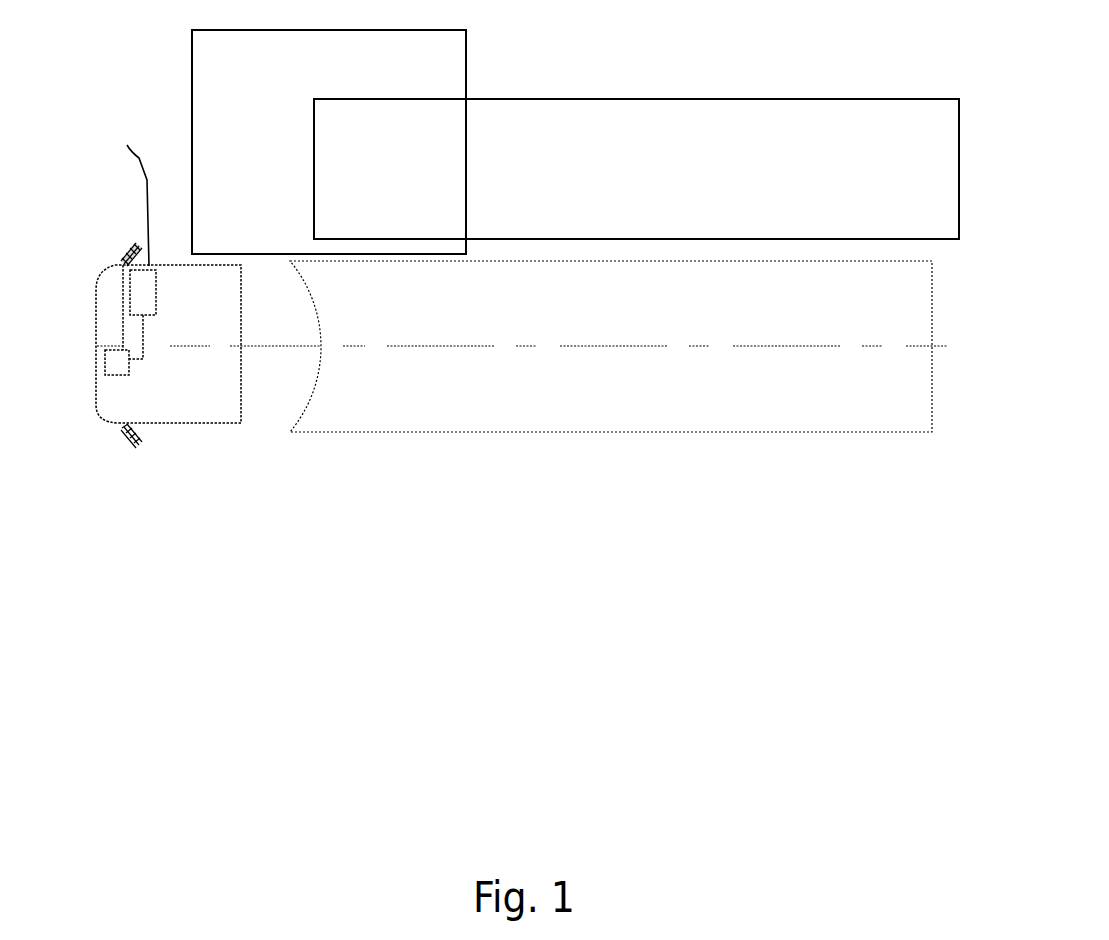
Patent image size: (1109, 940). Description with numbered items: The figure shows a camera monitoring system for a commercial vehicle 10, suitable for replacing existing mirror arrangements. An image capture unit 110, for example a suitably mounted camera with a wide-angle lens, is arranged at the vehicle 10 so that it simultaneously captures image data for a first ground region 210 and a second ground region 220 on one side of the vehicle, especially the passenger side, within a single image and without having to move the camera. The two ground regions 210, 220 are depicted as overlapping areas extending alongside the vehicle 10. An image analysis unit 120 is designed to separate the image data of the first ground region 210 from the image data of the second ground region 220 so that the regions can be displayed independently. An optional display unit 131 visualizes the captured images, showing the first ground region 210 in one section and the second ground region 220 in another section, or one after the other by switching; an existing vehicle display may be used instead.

The commercial vehicle 10 is at (216, 417).
The image capture unit 110 is at (128, 252).
The image analysis unit 120 is at (113, 376).
The display unit 131 is at (127, 145).
The first ground region 210 is at (919, 147).
The second ground region 220 is at (256, 76).